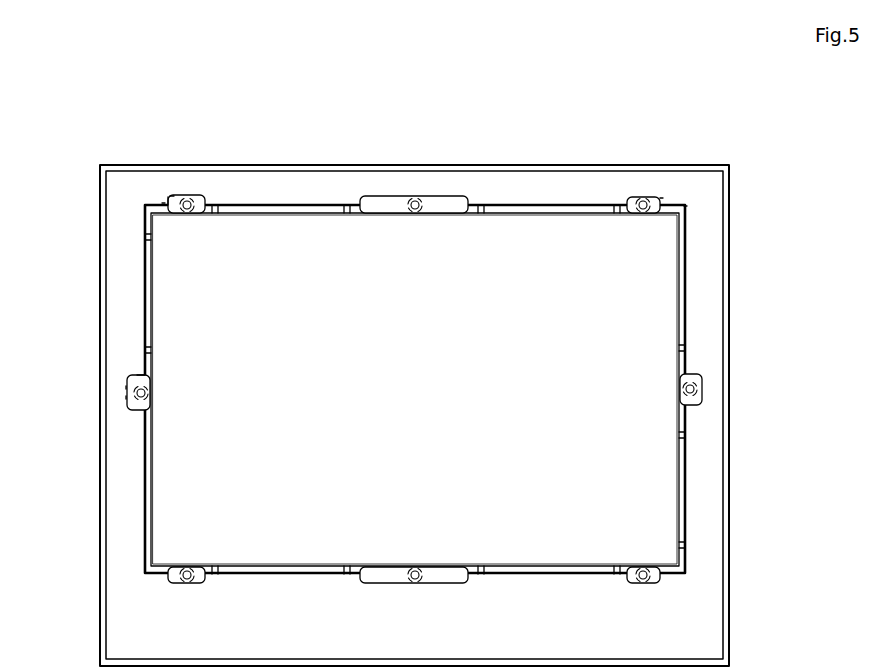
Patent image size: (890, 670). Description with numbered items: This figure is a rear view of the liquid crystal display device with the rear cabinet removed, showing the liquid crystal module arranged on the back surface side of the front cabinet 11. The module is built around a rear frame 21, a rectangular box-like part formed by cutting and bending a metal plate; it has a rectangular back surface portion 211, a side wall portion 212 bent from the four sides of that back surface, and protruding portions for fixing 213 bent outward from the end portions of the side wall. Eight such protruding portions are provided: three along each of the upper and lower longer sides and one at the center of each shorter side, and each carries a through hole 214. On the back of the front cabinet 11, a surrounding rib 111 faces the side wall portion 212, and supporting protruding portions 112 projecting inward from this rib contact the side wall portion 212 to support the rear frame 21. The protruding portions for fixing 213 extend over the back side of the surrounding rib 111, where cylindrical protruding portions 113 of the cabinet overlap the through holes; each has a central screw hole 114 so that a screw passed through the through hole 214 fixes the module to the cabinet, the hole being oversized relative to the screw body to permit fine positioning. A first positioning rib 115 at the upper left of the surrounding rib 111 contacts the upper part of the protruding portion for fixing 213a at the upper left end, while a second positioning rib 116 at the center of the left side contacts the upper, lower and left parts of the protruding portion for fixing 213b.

The front cabinet 11 is at (728, 292).
The surrounding rib 111 is at (145, 277).
The supporting protruding portions 112 is at (148, 237).
The protruding portions 113 is at (172, 197).
The screw hole 114 is at (163, 203).
The first positioning rib 115 is at (177, 197).
The second positioning rib 116 is at (130, 370).
The rear frame 21 is at (647, 458).
The back surface portion 211 is at (648, 498).
The side wall portion 212 is at (153, 512).
The protruding portions for fixing 213 is at (632, 197).
The protruding portion for fixing 213a is at (205, 200).
The protruding portion for fixing 213b is at (127, 410).
The through hole 214 is at (190, 203).